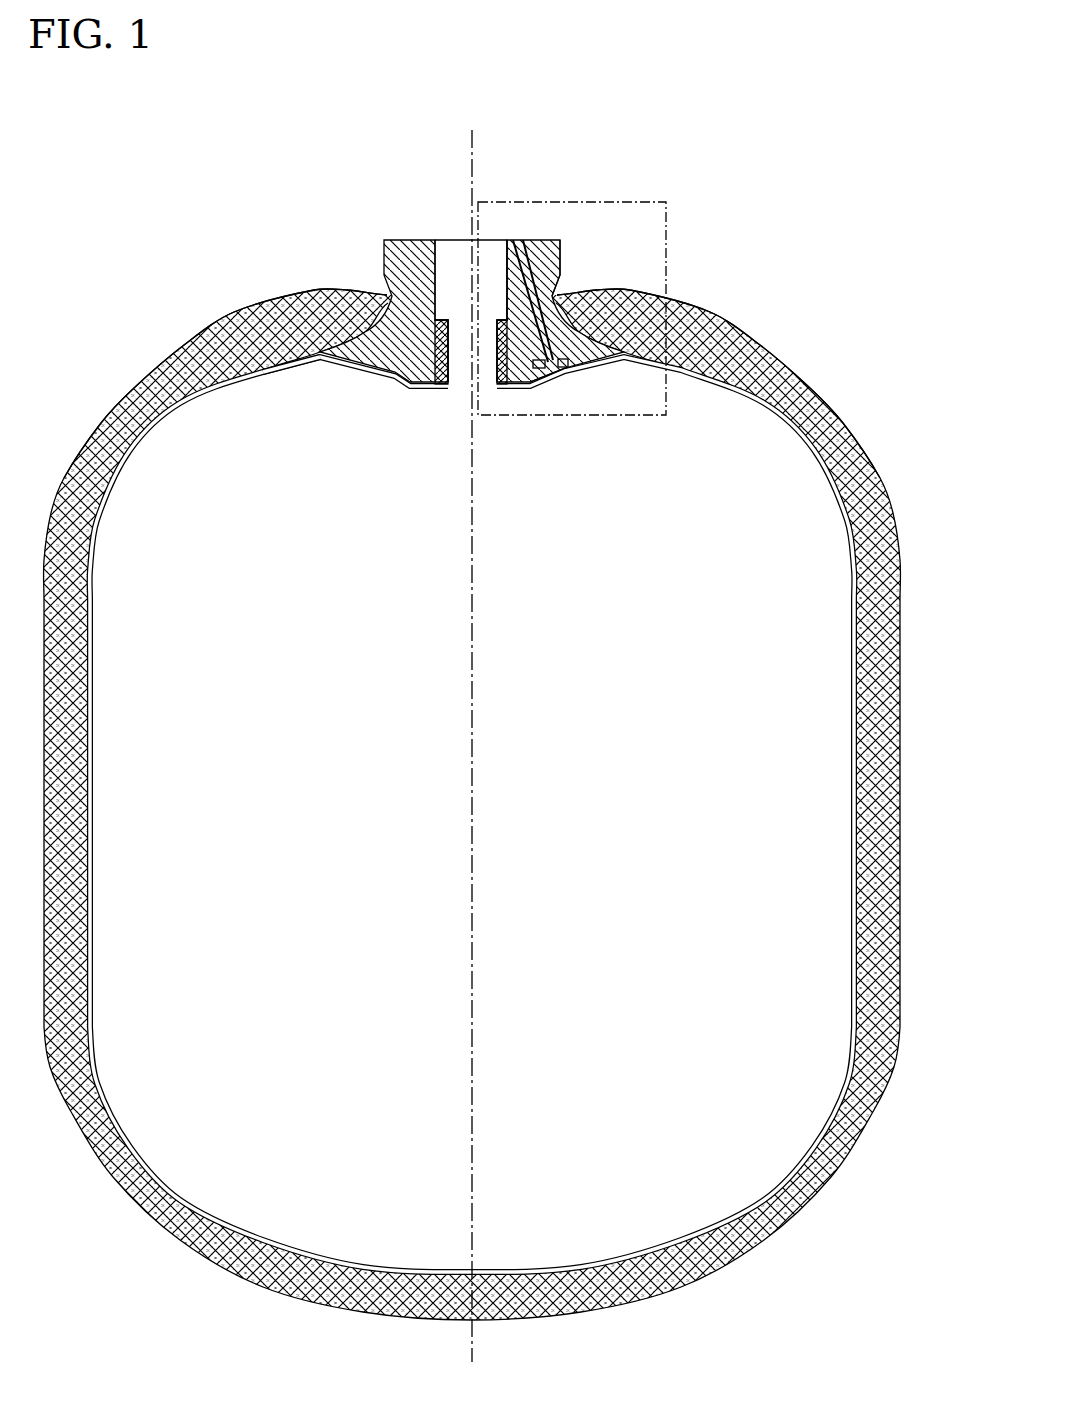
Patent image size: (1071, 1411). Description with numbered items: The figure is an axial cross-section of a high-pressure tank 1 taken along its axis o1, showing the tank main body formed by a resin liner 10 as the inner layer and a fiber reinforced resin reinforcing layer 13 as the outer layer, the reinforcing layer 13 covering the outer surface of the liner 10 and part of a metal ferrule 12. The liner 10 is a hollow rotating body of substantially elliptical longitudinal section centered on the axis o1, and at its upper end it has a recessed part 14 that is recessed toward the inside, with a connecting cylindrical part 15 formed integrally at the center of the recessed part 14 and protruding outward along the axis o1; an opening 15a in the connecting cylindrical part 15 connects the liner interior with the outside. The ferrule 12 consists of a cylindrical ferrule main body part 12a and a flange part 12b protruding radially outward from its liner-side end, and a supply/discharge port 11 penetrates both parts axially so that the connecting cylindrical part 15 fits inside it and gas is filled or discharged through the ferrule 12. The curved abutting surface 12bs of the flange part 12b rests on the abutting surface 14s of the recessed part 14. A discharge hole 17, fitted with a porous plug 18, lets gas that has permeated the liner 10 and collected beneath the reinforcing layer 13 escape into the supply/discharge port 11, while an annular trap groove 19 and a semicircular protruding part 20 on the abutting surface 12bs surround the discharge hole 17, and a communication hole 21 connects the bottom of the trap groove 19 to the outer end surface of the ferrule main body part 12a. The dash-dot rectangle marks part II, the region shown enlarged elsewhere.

The high-pressure tank 1 is at (748, 278).
The liner 10 is at (854, 601).
The supply/discharge port 11 is at (446, 252).
The ferrule 12 is at (453, 250).
The ferrule main body part 12a is at (549, 252).
The flange part 12b is at (749, 338).
The abutting surface 12bs is at (761, 400).
The reinforcing layer 13 is at (896, 511).
The recessed part 14 is at (283, 294).
The abutting surface 14s is at (641, 291).
The connecting cylindrical part 15 is at (352, 292).
The opening 15a is at (448, 373).
The discharge hole 17 is at (507, 292).
The plug 18 is at (533, 370).
The trap groove 19 is at (562, 372).
The protruding part 20 is at (548, 372).
The communication hole 21 is at (533, 257).
The axis o1 is at (480, 1340).
The part II is at (638, 201).